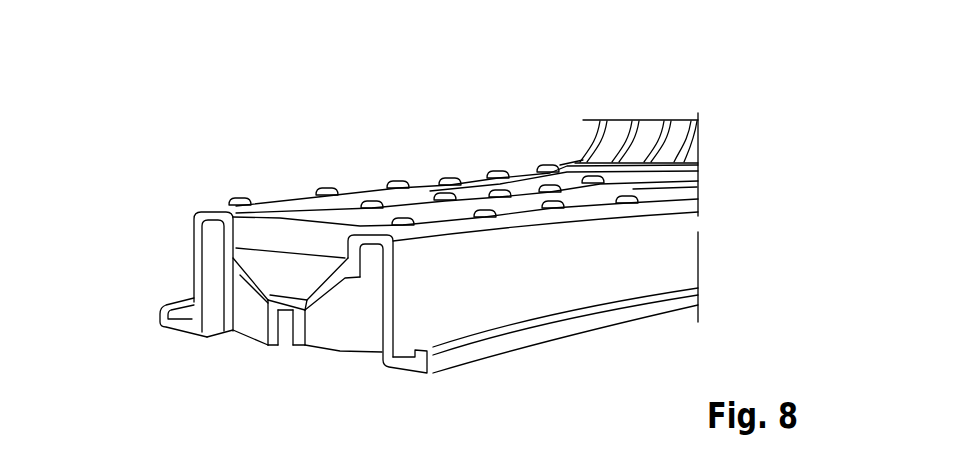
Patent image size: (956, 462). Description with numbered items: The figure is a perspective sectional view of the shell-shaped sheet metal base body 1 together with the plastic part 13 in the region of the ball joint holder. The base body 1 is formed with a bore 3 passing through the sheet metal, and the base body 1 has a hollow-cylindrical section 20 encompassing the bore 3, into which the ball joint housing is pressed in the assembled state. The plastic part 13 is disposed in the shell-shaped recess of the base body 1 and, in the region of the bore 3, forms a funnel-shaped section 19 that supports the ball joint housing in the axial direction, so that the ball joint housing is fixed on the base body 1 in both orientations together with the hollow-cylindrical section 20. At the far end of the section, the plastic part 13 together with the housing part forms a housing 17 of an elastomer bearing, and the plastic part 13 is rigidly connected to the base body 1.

The base body 1 is at (675, 254).
The bore 3 is at (277, 221).
The plastic part 13 is at (343, 332).
The housing 17 is at (616, 130).
The funnel-shaped section 19 is at (249, 290).
The hollow-cylindrical section 20 is at (192, 220).